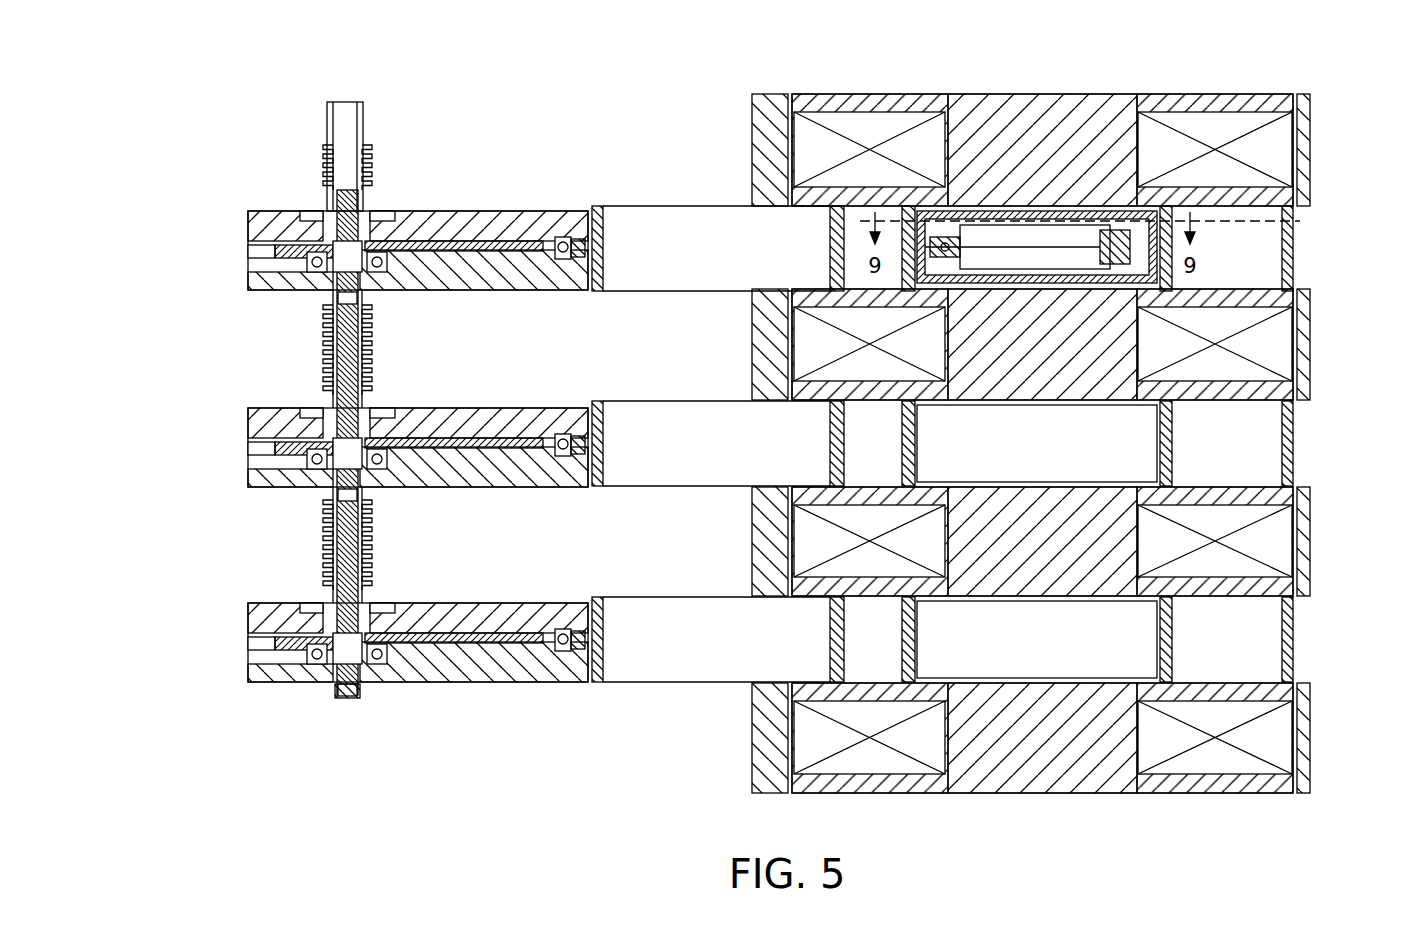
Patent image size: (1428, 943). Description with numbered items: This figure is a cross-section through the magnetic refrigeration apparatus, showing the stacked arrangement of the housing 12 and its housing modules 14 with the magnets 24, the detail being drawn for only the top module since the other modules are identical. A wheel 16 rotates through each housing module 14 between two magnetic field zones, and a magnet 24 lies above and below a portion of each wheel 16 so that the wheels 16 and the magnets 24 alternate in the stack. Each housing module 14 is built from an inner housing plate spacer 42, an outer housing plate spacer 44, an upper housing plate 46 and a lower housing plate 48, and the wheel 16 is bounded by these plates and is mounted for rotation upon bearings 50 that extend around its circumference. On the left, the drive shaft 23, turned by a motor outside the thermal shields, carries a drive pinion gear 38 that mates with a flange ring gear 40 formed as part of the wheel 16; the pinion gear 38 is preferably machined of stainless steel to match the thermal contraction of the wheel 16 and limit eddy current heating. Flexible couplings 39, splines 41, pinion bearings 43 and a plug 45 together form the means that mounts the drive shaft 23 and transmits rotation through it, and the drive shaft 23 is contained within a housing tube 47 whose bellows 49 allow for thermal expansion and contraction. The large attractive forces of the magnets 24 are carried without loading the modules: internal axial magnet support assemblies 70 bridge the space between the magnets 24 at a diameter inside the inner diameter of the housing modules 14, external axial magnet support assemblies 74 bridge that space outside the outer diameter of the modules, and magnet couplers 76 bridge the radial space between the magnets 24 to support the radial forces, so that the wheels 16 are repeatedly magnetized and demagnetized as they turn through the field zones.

The housing 12 is at (413, 418).
The housing module 14 is at (1180, 250).
The wheel 16 is at (1000, 240).
The drive shaft 23 is at (333, 130).
The magnet 24 is at (1235, 94).
The drive pinion gear 38 is at (300, 211).
The flexible coupling 39 is at (335, 214).
The flange ring gear 40 is at (433, 240).
The spline 41 is at (333, 262).
The inner housing plate spacer 42 is at (600, 250).
The pinion bearing 43 is at (437, 272).
The outer housing plate spacer 44 is at (256, 252).
The plug 45 is at (348, 700).
The upper housing plate 46 is at (510, 211).
The housing tube 47 is at (352, 103).
The lower housing plate 48 is at (489, 251).
The bellows 49 is at (372, 158).
The bearing 50 is at (568, 243).
The internal axial magnet support assembly 70 is at (725, 292).
The external axial magnet support assembly 74 is at (1292, 250).
The magnet coupler 76 is at (763, 94).